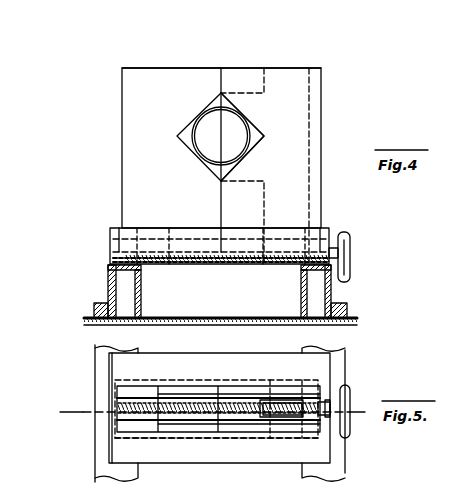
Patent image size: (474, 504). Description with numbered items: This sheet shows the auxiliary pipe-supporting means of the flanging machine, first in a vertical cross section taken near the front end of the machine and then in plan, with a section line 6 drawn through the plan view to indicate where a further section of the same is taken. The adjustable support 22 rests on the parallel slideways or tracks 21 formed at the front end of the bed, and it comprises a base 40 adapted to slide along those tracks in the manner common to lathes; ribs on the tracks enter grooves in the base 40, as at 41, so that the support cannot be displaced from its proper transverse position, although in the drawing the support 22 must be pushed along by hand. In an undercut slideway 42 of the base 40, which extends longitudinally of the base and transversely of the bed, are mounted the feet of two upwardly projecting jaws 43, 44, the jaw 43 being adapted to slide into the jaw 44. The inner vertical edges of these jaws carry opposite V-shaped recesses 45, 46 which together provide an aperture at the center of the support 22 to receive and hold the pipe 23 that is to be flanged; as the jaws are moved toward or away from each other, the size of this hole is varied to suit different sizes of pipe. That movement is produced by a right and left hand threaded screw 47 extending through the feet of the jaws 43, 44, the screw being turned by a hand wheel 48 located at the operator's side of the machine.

In FIG. 5, the section line 6 is at (210, 413).
In FIG. 4, the slideways or tracks 21 is at (142, 289).
In FIG. 5, the slideways or tracks 21 is at (118, 470).
In FIG. 4, the adjustable support 22 is at (198, 165).
In FIG. 5, the adjustable support 22 is at (219, 398).
In FIG. 4, the pipe 23 is at (222, 108).
In FIG. 4, the base 40 is at (115, 240).
In FIG. 4, the grooves 41 is at (115, 260).
In FIG. 5, the undercut slideway 42 is at (193, 433).
In FIG. 4, the jaw 43 is at (171, 80).
In FIG. 5, the jaw 43 is at (118, 398).
In FIG. 4, the jaw 44 is at (271, 93).
In FIG. 5, the jaw 44 is at (257, 392).
In FIG. 4, the V-shaped recess 45 is at (188, 129).
In FIG. 4, the V-shaped recess 46 is at (256, 142).
In FIG. 4, the right and left hand threaded screw 47 is at (112, 250).
In FIG. 4, the hand wheel 48 is at (350, 258).
In FIG. 5, the hand wheel 48 is at (348, 390).